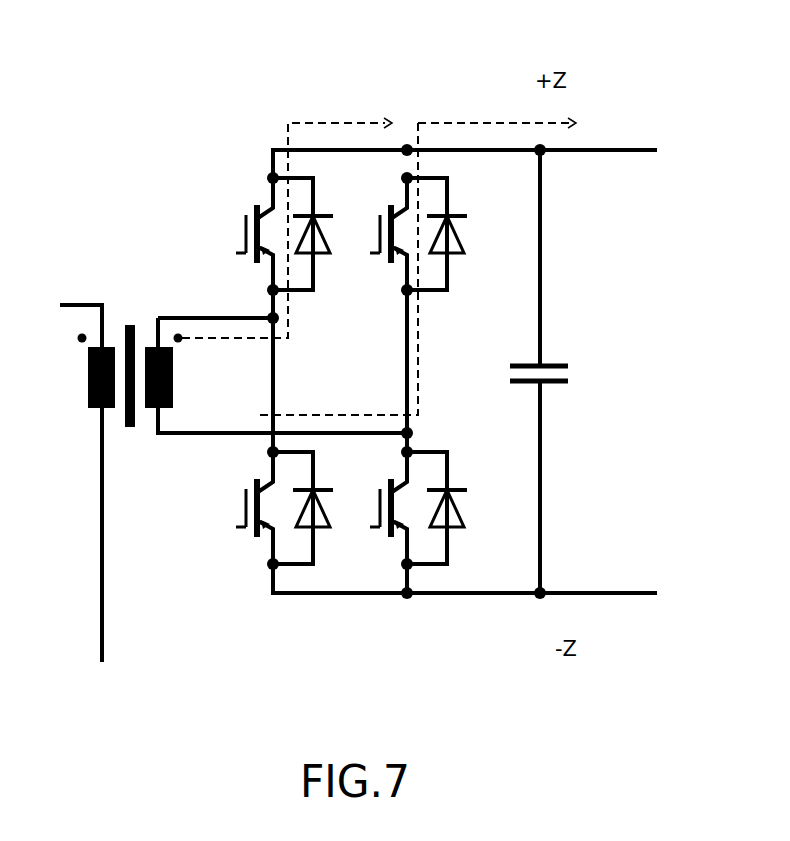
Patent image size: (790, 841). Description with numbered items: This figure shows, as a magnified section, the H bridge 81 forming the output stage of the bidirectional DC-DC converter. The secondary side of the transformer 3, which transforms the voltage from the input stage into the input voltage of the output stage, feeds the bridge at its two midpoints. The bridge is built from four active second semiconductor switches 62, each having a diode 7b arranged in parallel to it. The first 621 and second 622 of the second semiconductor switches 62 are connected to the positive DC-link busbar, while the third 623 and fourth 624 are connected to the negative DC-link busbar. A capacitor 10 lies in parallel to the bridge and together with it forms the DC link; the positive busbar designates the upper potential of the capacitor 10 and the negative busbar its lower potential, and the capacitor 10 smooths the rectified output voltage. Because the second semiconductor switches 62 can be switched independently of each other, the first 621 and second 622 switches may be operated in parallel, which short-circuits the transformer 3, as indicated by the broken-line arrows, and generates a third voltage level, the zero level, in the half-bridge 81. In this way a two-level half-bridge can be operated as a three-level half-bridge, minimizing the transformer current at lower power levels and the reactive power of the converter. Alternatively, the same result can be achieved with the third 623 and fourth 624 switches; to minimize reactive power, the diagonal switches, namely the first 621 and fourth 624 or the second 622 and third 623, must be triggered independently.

The transformer 3 is at (128, 310).
The diode 7b is at (323, 477).
The capacitor 10 is at (560, 392).
The second semiconductor switches 62 is at (267, 378).
The first of the second semiconductor switches 621 is at (242, 193).
The second of the second semiconductor switches 622 is at (370, 192).
The third of the second semiconductor switches 623 is at (247, 548).
The fourth of the second semiconductor switches 624 is at (372, 550).
The H bridge 81 is at (436, 85).